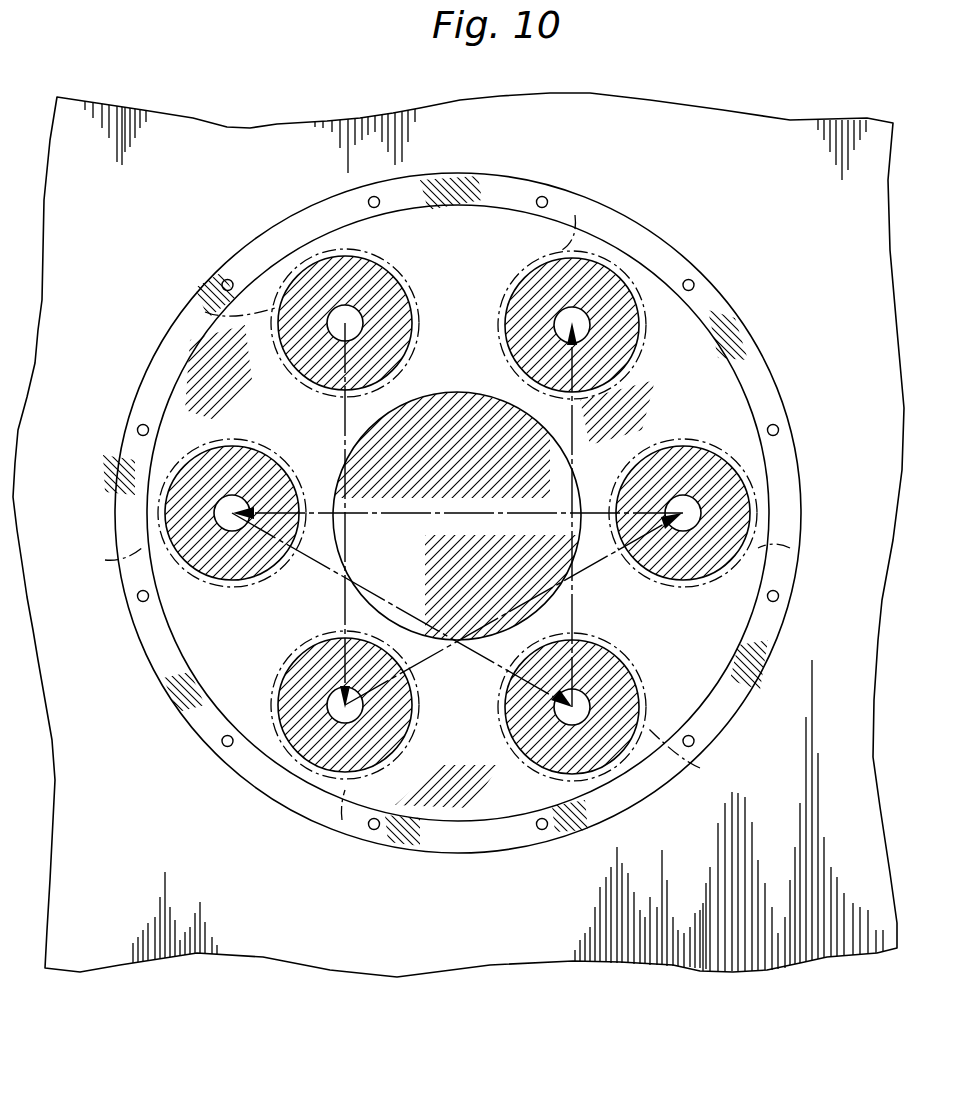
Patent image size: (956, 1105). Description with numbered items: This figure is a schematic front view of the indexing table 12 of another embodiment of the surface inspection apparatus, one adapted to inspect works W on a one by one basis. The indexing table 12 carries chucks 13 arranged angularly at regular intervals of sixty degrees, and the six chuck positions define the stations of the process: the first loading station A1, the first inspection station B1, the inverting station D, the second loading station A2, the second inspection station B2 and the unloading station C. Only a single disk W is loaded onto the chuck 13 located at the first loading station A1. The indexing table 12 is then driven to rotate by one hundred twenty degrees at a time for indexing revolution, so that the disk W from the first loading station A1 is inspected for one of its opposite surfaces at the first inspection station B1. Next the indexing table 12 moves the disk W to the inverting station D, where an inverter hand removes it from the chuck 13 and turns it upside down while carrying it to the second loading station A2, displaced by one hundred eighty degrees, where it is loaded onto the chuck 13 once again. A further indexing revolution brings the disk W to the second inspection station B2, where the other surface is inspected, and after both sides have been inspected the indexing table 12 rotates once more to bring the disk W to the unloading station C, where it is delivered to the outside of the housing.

The indexing table 12 is at (680, 380).
The chuck 13 is at (333, 310).
The work (disk) W is at (205, 312).
The first loading station A1 is at (270, 270).
The second loading station A2 is at (145, 512).
The first inspection station B1 is at (297, 770).
The second inspection station B2 is at (628, 775).
The unloading station C is at (642, 285).
The inverting station D is at (765, 498).